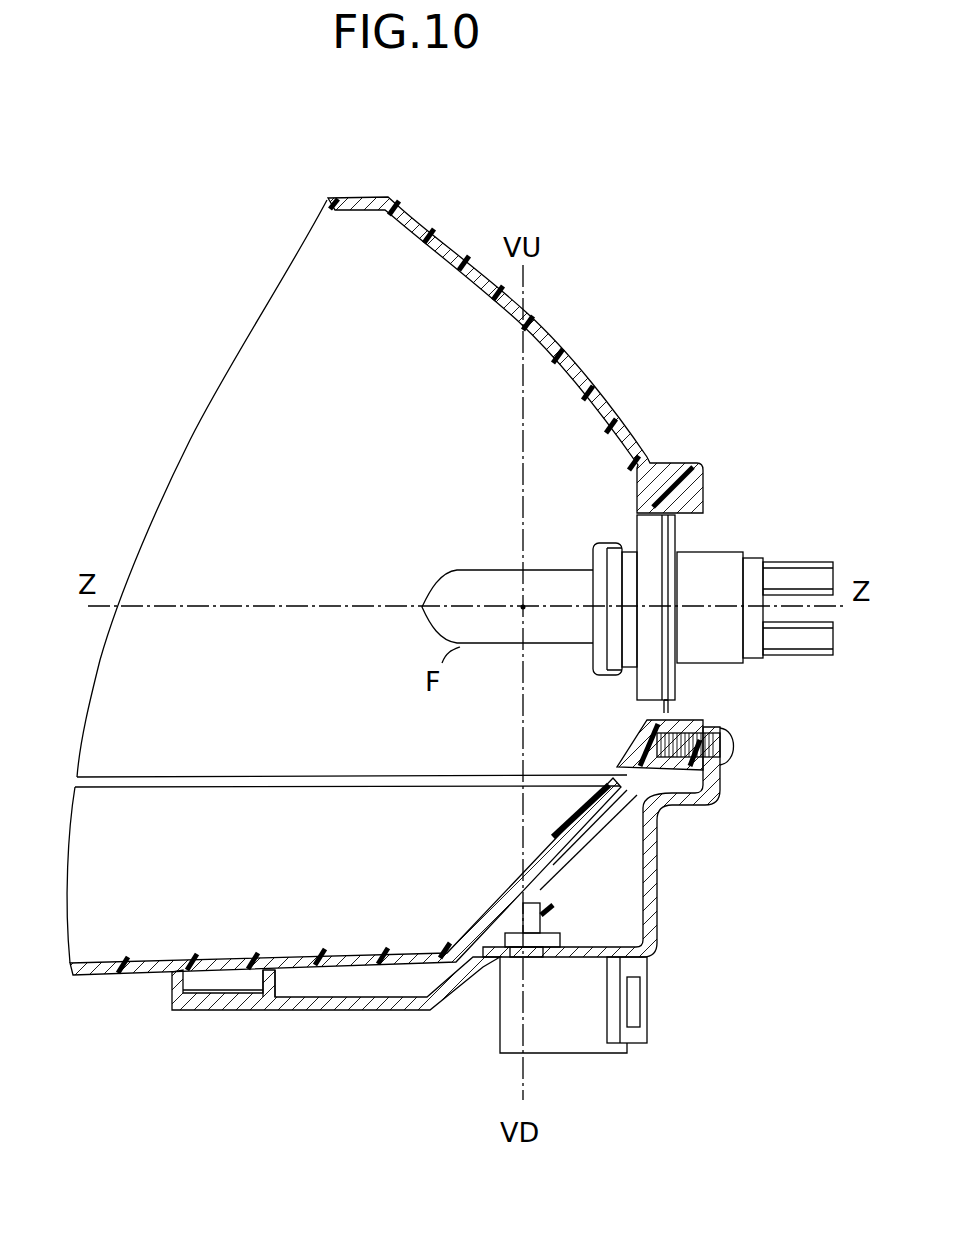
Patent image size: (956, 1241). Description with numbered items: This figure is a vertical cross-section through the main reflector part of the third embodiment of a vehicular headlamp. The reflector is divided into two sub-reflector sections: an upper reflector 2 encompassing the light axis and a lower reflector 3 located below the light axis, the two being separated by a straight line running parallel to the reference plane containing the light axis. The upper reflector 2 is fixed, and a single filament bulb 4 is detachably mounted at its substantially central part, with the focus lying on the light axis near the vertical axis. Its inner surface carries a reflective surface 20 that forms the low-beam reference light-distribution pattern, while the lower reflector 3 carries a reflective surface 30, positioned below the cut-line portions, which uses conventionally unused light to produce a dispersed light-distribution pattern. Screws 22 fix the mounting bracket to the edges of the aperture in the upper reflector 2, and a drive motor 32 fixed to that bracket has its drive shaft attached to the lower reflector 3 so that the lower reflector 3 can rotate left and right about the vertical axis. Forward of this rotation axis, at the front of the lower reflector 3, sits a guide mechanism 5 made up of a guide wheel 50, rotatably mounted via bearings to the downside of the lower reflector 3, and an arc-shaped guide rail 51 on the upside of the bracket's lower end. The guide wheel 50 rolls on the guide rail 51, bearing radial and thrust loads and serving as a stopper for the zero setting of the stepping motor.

The upper reflector 2 is at (429, 220).
The reflective surface 20 is at (476, 280).
The screws 22 is at (736, 748).
The lower reflector 3 is at (572, 865).
The reflective surface 30 is at (566, 828).
The drive motor 32 is at (595, 1012).
The single filament bulb 4 is at (458, 568).
The guide mechanism 5 is at (206, 1020).
The guide wheel 50 is at (247, 972).
The guide rail 51 is at (273, 985).